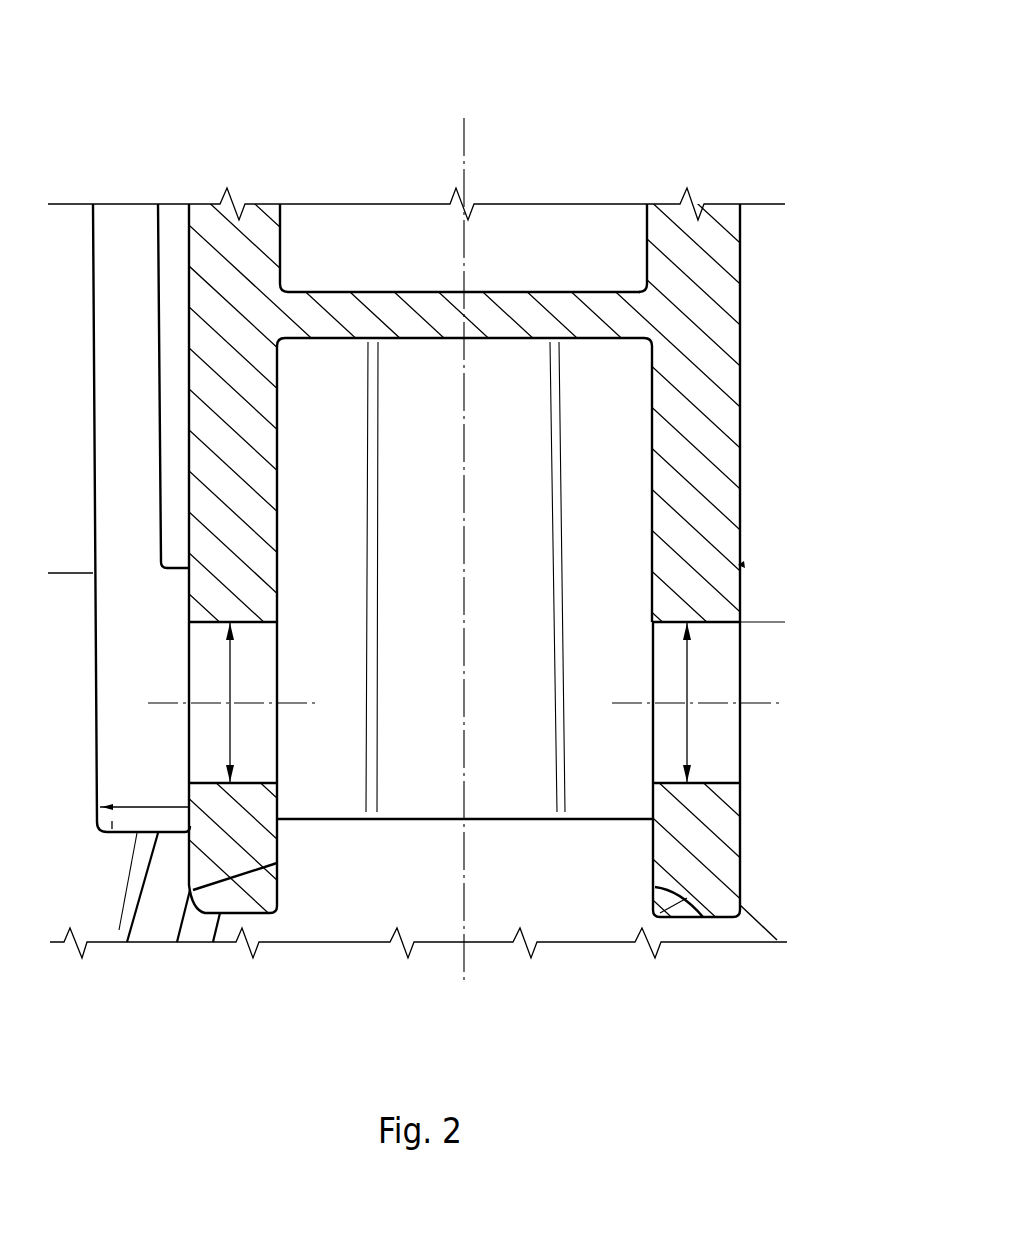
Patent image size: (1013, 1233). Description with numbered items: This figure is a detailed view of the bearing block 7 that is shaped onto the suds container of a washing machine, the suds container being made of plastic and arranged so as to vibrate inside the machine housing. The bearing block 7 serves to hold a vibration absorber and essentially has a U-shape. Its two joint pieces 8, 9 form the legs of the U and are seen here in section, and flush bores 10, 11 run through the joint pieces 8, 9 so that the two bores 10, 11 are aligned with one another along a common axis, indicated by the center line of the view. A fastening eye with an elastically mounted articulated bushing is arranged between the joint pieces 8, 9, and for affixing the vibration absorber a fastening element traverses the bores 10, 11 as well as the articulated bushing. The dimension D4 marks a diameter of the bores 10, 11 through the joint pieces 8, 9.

The bearing block 7 is at (506, 509).
The joint piece 8 is at (230, 427).
The joint piece 9 is at (685, 365).
The bore 10 is at (210, 662).
The bore 11 is at (717, 657).
The diameter dimension D4 is at (230, 732).